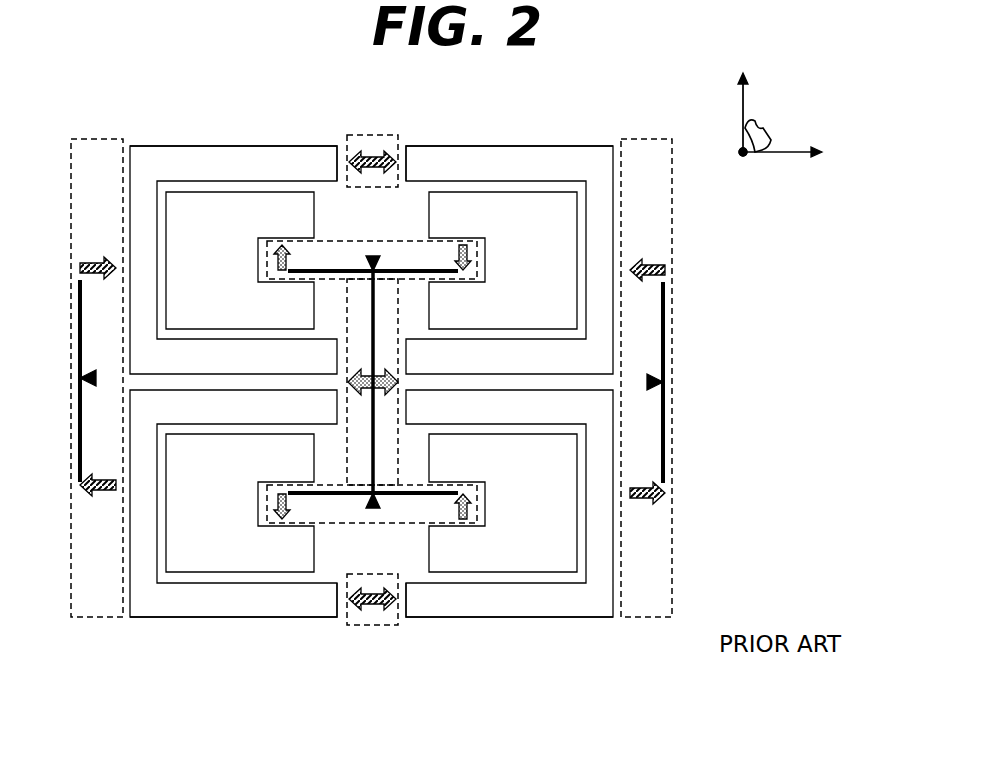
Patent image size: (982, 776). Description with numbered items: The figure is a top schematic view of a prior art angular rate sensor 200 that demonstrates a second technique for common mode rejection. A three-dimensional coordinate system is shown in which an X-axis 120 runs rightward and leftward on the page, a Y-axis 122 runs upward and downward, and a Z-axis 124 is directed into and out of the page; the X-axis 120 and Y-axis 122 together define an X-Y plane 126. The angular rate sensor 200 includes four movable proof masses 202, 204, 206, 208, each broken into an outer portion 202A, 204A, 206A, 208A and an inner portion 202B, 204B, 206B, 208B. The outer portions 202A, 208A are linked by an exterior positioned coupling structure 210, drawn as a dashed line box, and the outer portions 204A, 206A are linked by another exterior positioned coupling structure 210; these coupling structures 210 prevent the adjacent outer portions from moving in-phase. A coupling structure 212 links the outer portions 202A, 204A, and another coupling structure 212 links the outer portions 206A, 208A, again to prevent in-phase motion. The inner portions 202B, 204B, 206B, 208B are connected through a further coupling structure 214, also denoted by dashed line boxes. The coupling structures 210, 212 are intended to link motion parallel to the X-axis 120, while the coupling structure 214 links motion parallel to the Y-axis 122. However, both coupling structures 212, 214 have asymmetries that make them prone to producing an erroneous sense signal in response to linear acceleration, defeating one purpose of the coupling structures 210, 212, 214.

The prior art angular rate sensor 200 is at (11, 664).
The proof mass 202 is at (139, 139).
The outer portion 202A is at (285, 146).
The inner portion 202B is at (238, 274).
The proof mass 204 is at (591, 139).
The outer portion 204A is at (540, 146).
The inner portion 204B is at (555, 274).
The proof mass 206 is at (627, 631).
The outer portion 206A is at (558, 618).
The inner portion 206B is at (555, 517).
The proof mass 208 is at (141, 629).
The outer portion 208A is at (287, 618).
The inner portion 208B is at (238, 517).
The exterior positioned coupling structure 210 is at (68, 187).
The coupling structure 212 is at (378, 135).
The coupling structure 214 is at (418, 241).
The X-axis 120 is at (845, 152).
The Y-axis 122 is at (728, 56).
The Z-axis 124 is at (753, 168).
The X-Y plane 126 is at (763, 128).